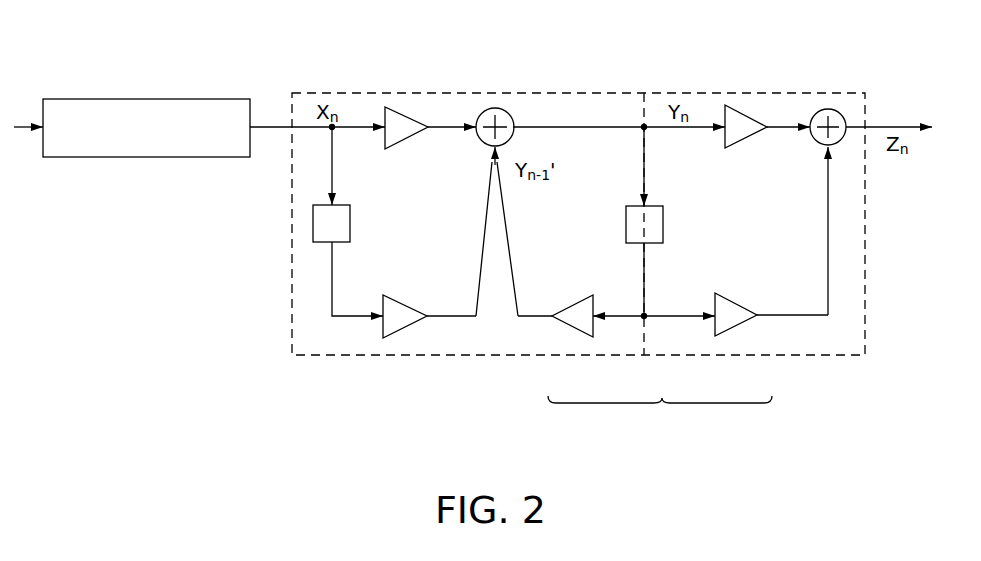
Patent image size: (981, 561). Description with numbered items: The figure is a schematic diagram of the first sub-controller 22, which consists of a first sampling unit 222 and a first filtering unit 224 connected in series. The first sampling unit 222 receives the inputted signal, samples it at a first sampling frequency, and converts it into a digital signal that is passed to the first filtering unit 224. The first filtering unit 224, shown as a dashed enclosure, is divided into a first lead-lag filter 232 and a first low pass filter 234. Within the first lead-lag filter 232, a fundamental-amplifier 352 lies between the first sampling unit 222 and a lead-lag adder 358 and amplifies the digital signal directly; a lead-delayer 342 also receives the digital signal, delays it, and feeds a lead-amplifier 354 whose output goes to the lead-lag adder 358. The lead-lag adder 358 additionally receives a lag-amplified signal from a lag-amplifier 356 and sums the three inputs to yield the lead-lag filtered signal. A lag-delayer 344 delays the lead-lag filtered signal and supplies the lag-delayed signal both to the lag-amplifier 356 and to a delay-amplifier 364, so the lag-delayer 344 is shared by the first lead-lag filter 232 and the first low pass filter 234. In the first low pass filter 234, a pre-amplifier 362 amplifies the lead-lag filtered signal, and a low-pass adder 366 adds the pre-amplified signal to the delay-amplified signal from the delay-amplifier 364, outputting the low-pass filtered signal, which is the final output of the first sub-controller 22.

The first sub-controller 22 is at (125, 58).
The first sampling unit 222 is at (178, 157).
The first filtering unit 224 is at (660, 417).
The first lead-lag filter 232 is at (486, 347).
The first low pass filter 234 is at (705, 345).
The lead-delayer 342 is at (345, 207).
The lag-delayer 344 is at (660, 235).
The fundamental-amplifier 352 is at (396, 121).
The lead-amplifier 354 is at (388, 310).
The lag-amplifier 356 is at (590, 305).
The lead-lag adder 358 is at (500, 115).
The pre-amplifier 362 is at (745, 130).
The delay-amplifier 364 is at (720, 310).
The low-pass adder 366 is at (835, 117).